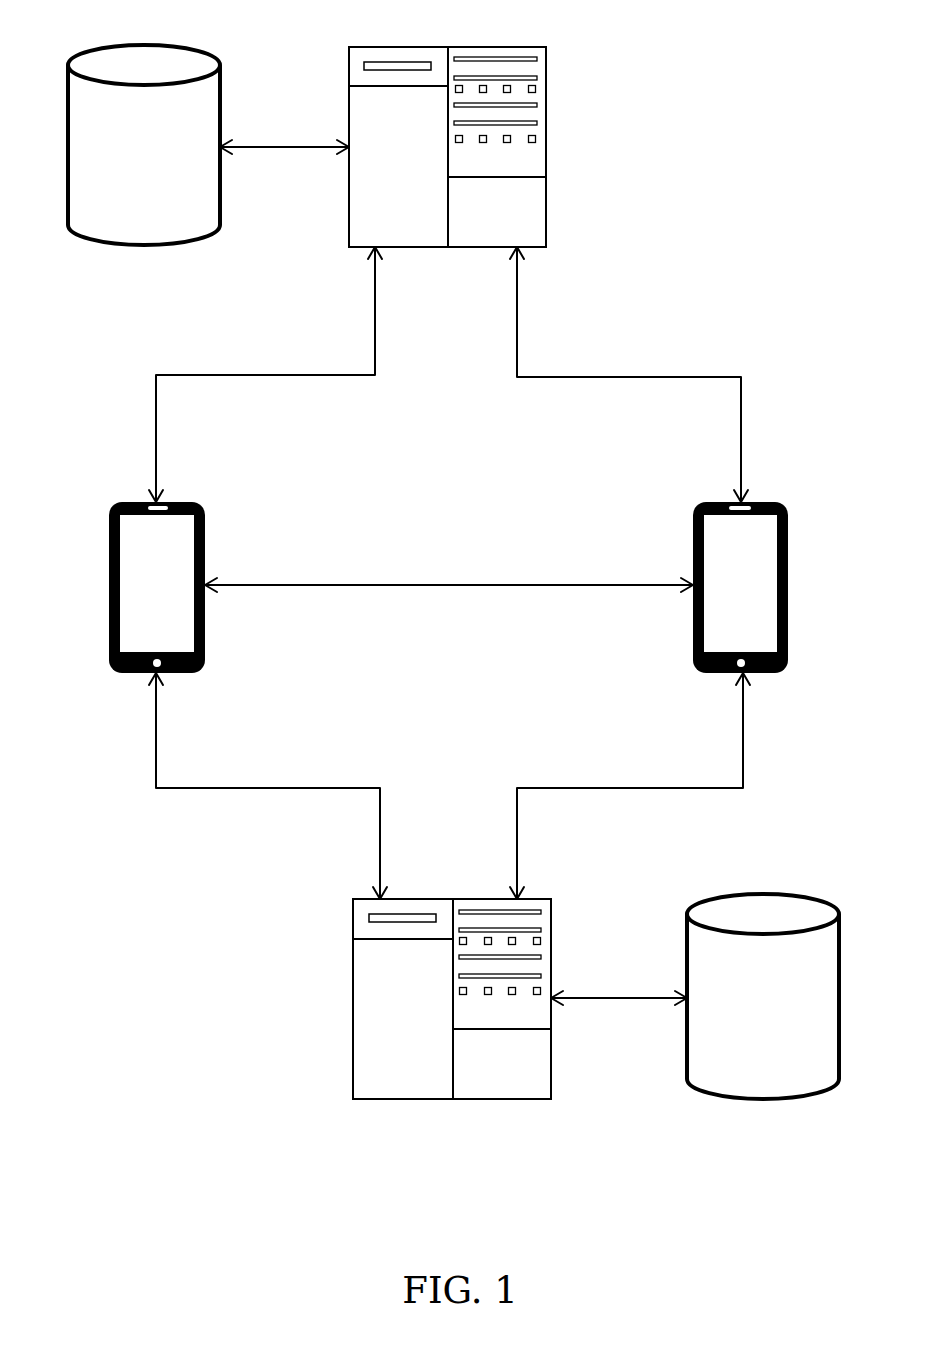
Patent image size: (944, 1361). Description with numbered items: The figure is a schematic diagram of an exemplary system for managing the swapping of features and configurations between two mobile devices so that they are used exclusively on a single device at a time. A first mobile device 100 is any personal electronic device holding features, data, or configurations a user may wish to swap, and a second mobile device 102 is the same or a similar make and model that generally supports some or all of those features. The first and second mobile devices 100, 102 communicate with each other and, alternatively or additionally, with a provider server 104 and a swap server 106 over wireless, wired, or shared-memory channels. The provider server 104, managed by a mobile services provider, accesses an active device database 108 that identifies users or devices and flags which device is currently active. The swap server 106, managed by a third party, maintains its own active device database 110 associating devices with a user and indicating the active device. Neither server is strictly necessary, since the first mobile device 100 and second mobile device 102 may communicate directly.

The first mobile device 100 is at (128, 582).
The second mobile device 102 is at (759, 581).
The provider server 104 is at (447, 131).
The swap server 106 is at (452, 1016).
The active device database 108 is at (144, 128).
The active device database 110 is at (763, 980).